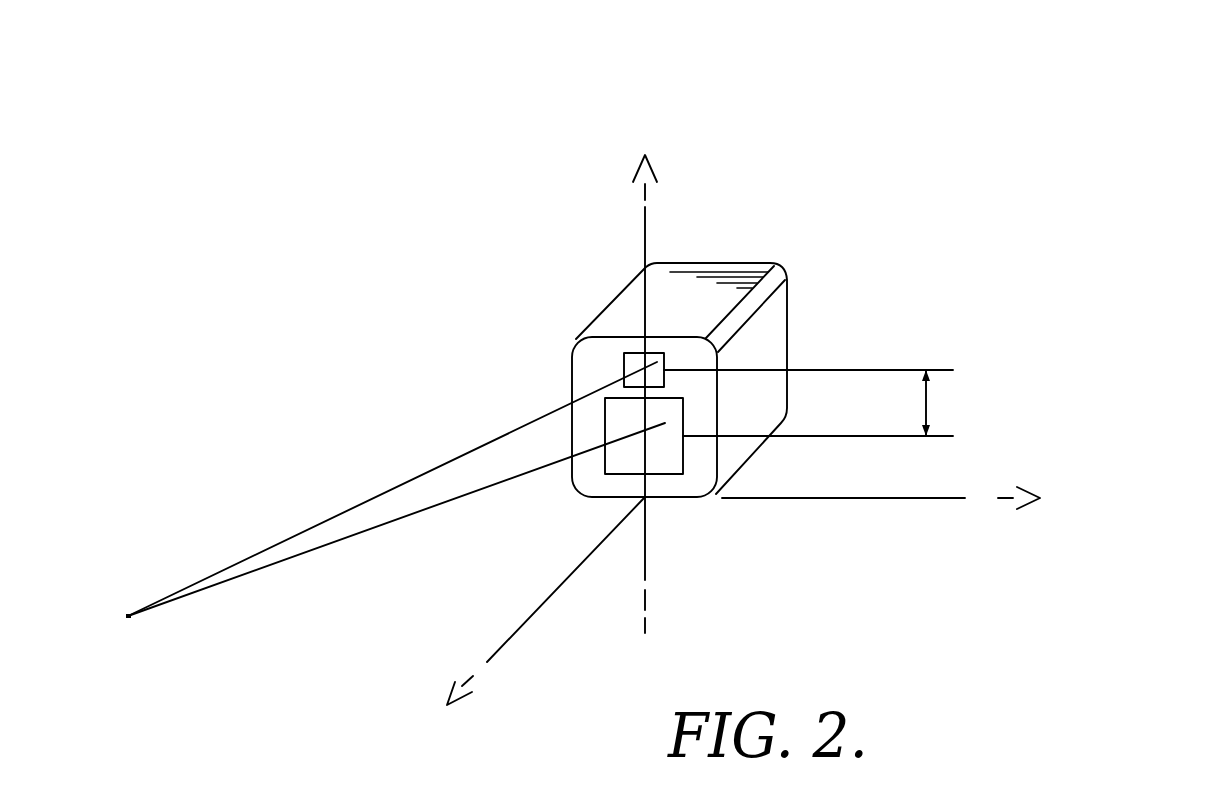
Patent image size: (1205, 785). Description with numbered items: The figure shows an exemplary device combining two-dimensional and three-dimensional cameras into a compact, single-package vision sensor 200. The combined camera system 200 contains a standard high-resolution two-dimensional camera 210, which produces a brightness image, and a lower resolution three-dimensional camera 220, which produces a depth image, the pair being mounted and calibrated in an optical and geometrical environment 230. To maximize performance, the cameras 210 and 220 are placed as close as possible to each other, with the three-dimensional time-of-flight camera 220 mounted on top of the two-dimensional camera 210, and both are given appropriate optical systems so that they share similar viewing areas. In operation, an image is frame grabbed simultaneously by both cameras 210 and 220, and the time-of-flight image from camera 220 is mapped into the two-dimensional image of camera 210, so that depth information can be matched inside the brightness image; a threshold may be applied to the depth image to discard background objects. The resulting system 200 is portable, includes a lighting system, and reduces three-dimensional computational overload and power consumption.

The vision sensor 200 is at (401, 75).
The 2D camera 210 is at (663, 467).
The 3D camera 220 is at (624, 360).
The optical and geometrical environment 230 is at (775, 318).